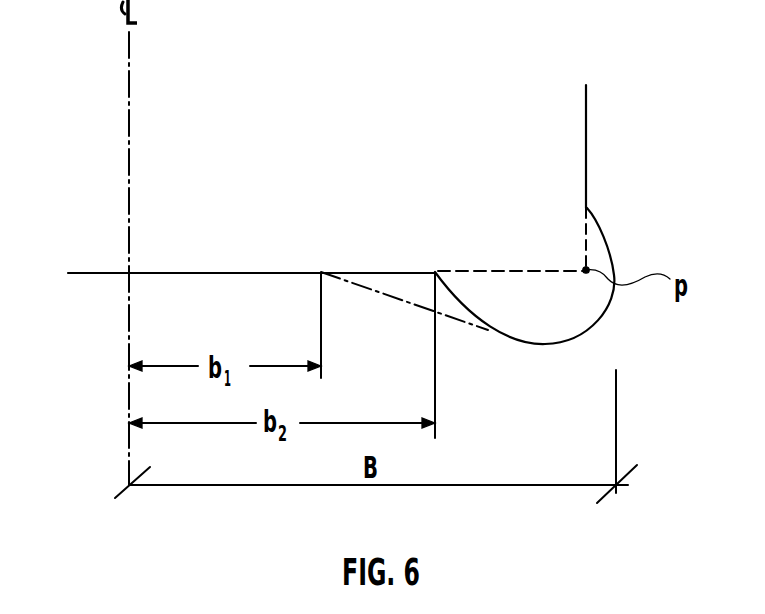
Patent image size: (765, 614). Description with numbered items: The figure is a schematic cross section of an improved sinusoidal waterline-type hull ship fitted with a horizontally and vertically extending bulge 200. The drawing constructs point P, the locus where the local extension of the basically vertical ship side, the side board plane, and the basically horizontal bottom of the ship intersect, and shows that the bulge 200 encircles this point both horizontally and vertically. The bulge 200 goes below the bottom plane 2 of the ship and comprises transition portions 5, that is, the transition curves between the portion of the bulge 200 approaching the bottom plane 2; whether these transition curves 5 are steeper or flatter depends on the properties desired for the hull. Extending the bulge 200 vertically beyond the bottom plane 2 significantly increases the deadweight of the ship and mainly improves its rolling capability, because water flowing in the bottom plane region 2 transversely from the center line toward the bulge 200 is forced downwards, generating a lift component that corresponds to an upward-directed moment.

The bottom plane 2 is at (215, 274).
The transition portions 5 is at (434, 276).
The bulge 200 is at (548, 346).